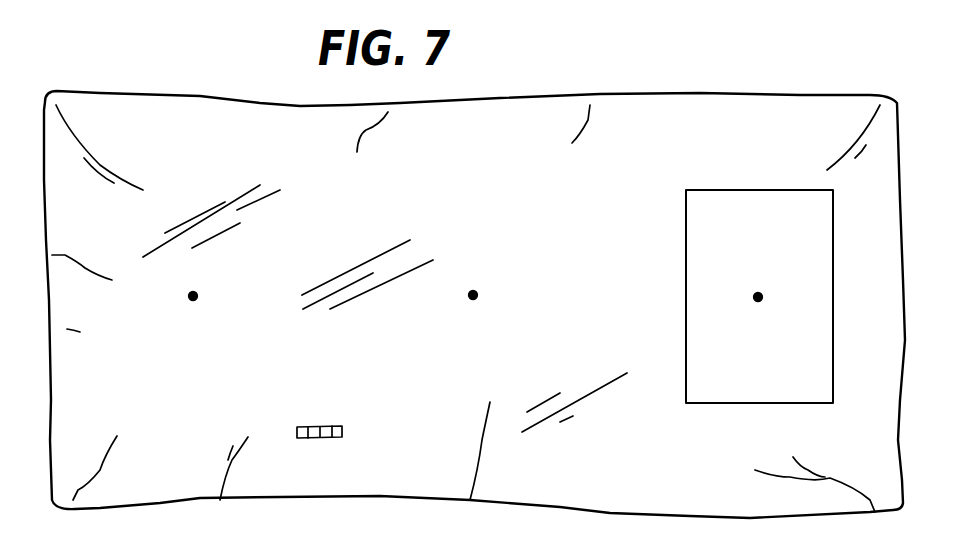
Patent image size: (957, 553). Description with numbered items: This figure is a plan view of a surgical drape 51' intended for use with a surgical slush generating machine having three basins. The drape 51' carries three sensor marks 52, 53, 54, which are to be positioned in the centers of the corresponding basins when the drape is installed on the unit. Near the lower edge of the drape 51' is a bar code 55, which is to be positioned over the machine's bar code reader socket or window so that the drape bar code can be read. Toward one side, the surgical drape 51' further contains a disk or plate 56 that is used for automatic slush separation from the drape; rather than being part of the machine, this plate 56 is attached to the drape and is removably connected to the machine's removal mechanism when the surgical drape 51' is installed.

The surgical drape 51' is at (474, 282).
The sensor mark 52 is at (474, 297).
The sensor mark 53 is at (194, 298).
The sensor mark 54 is at (753, 294).
The bar code 55 is at (313, 438).
The disk or plate 56 is at (690, 189).